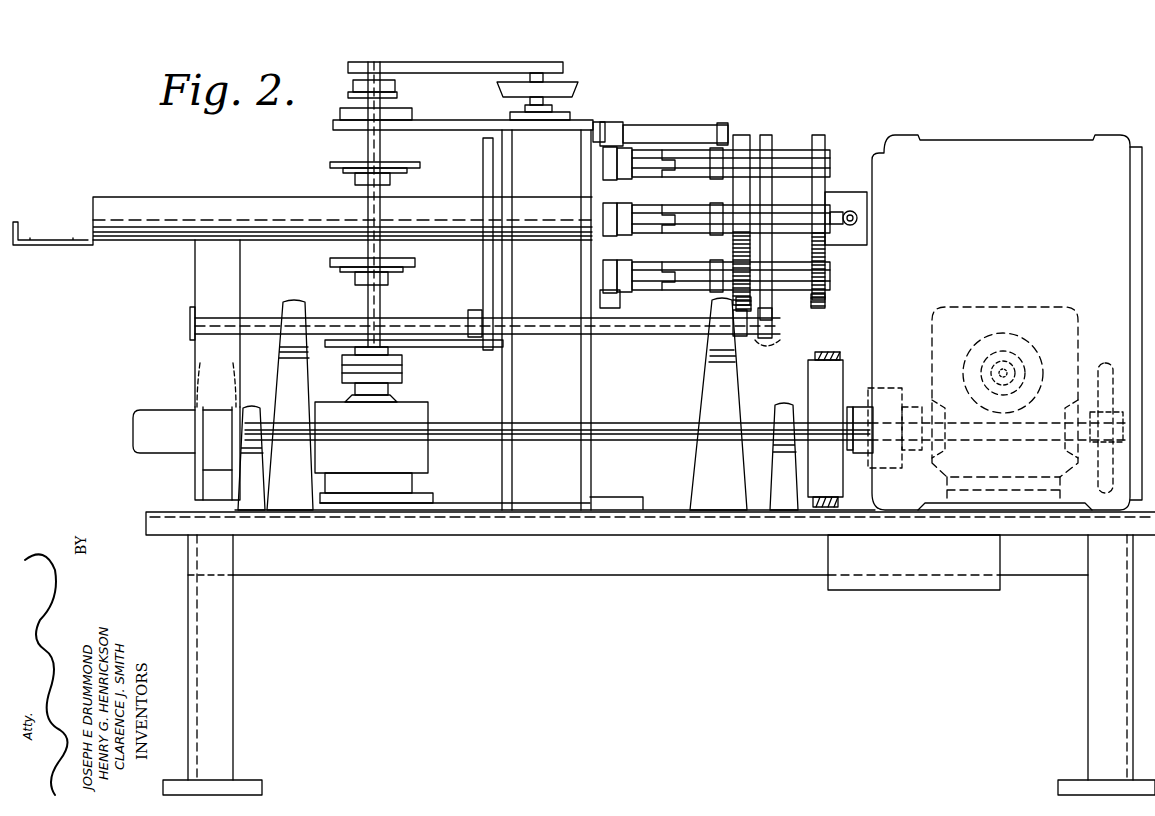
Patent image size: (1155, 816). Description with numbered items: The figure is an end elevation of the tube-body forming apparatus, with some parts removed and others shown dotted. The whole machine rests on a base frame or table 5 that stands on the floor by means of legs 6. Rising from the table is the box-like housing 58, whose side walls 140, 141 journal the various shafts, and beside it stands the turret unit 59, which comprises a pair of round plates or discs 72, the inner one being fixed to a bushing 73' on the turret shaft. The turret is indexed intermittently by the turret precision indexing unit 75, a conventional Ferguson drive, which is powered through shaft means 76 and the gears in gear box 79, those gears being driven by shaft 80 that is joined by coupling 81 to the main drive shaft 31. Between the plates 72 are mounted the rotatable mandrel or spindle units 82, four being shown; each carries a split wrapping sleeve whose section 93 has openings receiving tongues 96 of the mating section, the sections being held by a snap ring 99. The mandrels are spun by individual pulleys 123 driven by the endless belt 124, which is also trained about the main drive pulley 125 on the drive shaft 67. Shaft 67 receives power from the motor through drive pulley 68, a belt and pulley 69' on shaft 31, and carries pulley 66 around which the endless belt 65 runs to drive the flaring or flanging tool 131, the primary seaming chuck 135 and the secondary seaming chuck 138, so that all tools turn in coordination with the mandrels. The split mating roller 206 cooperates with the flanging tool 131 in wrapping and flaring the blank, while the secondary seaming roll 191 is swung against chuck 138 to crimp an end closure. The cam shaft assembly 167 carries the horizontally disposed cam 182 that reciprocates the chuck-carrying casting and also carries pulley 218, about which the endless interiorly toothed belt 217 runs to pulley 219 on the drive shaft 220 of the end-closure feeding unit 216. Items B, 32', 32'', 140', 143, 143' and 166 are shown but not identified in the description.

The base frame or table 5 is at (635, 565).
The legs 6 is at (228, 710).
The main drive shaft 31 is at (472, 437).
The brake block 32' is at (836, 343).
The brake housing 32'' is at (818, 433).
The box-like housing 58 is at (606, 386).
The turret unit 59 is at (771, 133).
The endless belt 65 is at (487, 280).
The pulley 66 is at (468, 320).
The drive shaft 67 is at (545, 320).
The drive pulley 68 is at (230, 287).
The pulley 69' is at (186, 453).
The round plates or discs 72 is at (736, 297).
The bushing 73' is at (846, 202).
The turret precision indexing unit 75 is at (1002, 233).
The shaft means 76 is at (988, 364).
The gear box 79 is at (997, 313).
The shaft 80 is at (922, 410).
The coupling 81 is at (887, 463).
The mandrel or spindle units 82 is at (702, 178).
The section of cup-like element 93 is at (666, 219).
The tongues 96 is at (669, 207).
The snap ring 99 is at (692, 218).
The pulleys 123 is at (767, 152).
The endless belt 124 is at (772, 295).
The main drive pulley 125 is at (765, 350).
The flaring or flanging tool 131 is at (615, 176).
The primary seaming chuck 135 is at (617, 233).
The secondary seaming chuck 138 is at (593, 265).
The wall 140 is at (434, 452).
The speed reducer 140' is at (410, 375).
The wall 141 is at (590, 470).
The guide bar 143 is at (342, 206).
The guide channel 143' is at (53, 225).
The gear 166 is at (408, 173).
The cam shaft assembly 167 is at (380, 153).
The horizontally disposed cam 182 is at (415, 262).
The secondary seaming roll 191 is at (623, 303).
The split mating roller 206 is at (683, 132).
The feeding unit 216 is at (586, 106).
The endless interiorly toothed belt 217 is at (467, 53).
The pulley 218 is at (380, 62).
The pulley 219 is at (545, 55).
The drive shaft 220 is at (543, 78).
The gear plate B is at (750, 124).